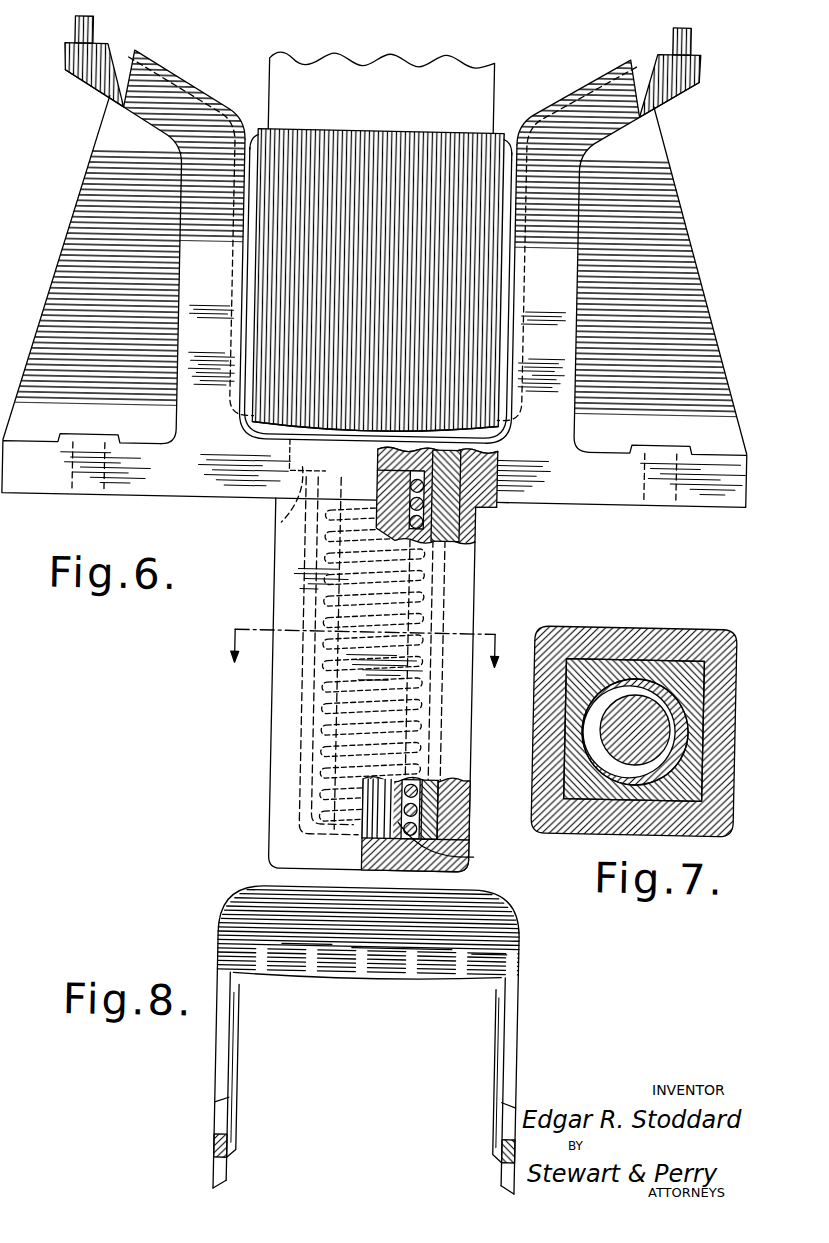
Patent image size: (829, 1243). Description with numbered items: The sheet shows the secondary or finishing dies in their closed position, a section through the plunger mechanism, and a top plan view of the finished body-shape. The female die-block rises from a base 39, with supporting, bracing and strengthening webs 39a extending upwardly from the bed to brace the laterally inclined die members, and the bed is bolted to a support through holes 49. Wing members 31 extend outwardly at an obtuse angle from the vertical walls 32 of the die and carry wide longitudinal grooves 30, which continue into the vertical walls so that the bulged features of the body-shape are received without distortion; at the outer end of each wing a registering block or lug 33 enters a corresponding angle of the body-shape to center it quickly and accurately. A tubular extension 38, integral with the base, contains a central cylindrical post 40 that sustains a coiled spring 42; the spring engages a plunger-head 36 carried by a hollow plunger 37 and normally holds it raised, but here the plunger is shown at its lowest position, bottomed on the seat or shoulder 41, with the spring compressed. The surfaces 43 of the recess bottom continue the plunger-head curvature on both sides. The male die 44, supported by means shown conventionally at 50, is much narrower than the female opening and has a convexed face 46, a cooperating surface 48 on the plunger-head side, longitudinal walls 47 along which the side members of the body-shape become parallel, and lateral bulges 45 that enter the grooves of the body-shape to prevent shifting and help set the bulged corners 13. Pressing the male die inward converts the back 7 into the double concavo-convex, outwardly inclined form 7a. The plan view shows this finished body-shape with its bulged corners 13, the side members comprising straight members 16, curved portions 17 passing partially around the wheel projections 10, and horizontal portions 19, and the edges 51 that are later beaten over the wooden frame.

In FIG. 6, the back 7 is at (364, 663).
In FIG. 8, the concavo-convex form 7a is at (355, 930).
In FIG. 6, the wheel projections 10 is at (232, 265).
In FIG. 8, the wheel projections 10 is at (238, 1058).
In FIG. 8, the semi-circular corners 13 is at (233, 909).
In FIG. 8, the straight members 16 is at (218, 1180).
In FIG. 8, the curved portions 17 is at (217, 1122).
In FIG. 8, the horizontal portions 19 is at (221, 1088).
In FIG. 6, the longitudinal grooves 30 is at (180, 98).
In FIG. 6, the wing members 31 is at (89, 73).
In FIG. 6, the vertical walls 32 is at (377, 287).
In FIG. 6, the registering block or lug 33 is at (85, 36).
In FIG. 6, the plunger-head 36 is at (382, 447).
In FIG. 6, the hollow plunger 37 is at (473, 518).
In FIG. 7, the hollow plunger 37 is at (682, 675).
In FIG. 6, the tubular extension 38 is at (283, 739).
In FIG. 7, the tubular extension 38 is at (606, 627).
In FIG. 6, the base 39 is at (164, 477).
In FIG. 6, the webs 39a is at (695, 223).
In FIG. 6, the central cylindrical post 40 is at (481, 855).
In FIG. 7, the central cylindrical post 40 is at (610, 723).
In FIG. 6, the seat or shoulder 41 is at (282, 524).
In FIG. 6, the coiled spring 42 is at (473, 791).
In FIG. 7, the coiled spring 42 is at (597, 773).
In FIG. 6, the surfaces 43 is at (257, 428).
In FIG. 6, the male die 44 is at (376, 155).
In FIG. 6, the lateral bulges or extensions 45 is at (237, 375).
In FIG. 6, the convexed face 46 is at (378, 433).
In FIG. 6, the longitudinal walls 47 is at (246, 143).
In FIG. 6, the cooperating surface 48 is at (294, 436).
In FIG. 6, the holes 49 is at (643, 465).
In FIG. 6, the supporting means 50 is at (457, 90).
In FIG. 8, the edges 51 is at (297, 889).